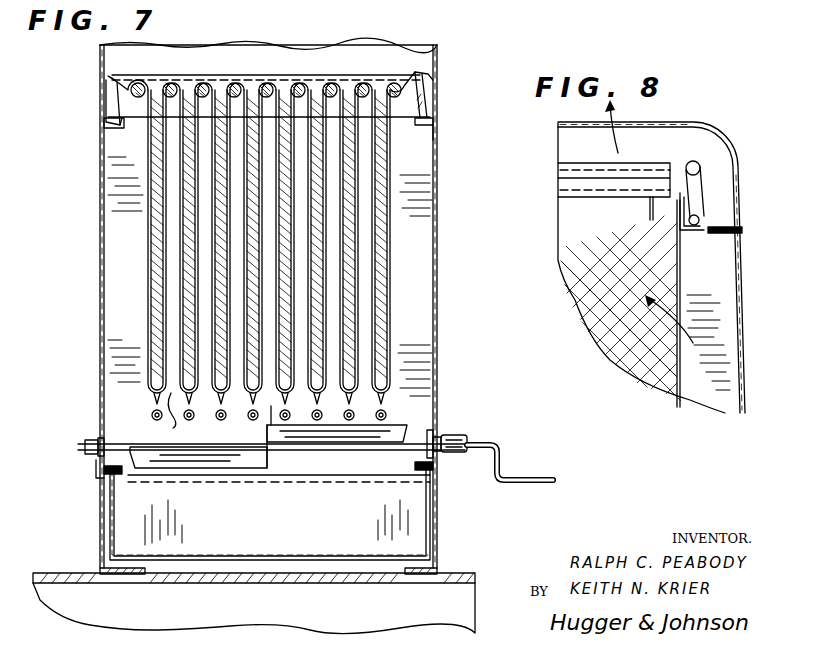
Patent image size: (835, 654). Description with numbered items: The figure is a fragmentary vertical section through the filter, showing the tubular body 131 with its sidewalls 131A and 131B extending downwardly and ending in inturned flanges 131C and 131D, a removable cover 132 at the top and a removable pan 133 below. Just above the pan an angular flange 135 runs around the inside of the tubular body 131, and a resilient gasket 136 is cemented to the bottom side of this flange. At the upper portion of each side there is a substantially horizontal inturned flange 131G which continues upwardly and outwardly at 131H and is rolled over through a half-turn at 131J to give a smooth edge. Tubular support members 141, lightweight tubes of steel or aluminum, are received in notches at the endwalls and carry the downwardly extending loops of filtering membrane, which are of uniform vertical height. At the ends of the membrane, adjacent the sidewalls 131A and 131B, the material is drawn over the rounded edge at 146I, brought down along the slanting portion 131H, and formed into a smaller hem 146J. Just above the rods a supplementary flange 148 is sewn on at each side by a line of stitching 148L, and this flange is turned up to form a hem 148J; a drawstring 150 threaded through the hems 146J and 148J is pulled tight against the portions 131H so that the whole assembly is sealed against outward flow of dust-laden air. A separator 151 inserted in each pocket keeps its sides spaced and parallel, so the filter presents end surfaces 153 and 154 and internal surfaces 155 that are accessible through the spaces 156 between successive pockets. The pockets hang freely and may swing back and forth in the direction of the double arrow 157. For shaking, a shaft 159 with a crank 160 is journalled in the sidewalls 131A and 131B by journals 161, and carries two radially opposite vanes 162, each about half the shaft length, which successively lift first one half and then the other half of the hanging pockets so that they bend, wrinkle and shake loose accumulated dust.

In FIG. 7, the tubular body 131 is at (100, 350).
In FIG. 7, the sidewall 131A is at (100, 236).
In FIG. 7, the sidewall 131B is at (437, 222).
In FIG. 7, the inturned flange 131C is at (100, 568).
In FIG. 7, the inturned flange 131D is at (430, 568).
In FIG. 7, the inturned flange 131G is at (422, 125).
In FIG. 7, the upwardly and outwardly extending flange portion 131H is at (425, 97).
In FIG. 8, the upwardly and outwardly extending flange portion 131H is at (673, 217).
In FIG. 7, the rolled-over flange 131J is at (437, 72).
In FIG. 7, the removable cover 132 is at (100, 60).
In FIG. 7, the removable pan 133 is at (135, 522).
In FIG. 7, the angular flange 135 is at (100, 468).
In FIG. 7, the resilient gasket 136 is at (108, 475).
In FIG. 7, the tubular support members 141 is at (240, 82).
In FIG. 7, the membrane end portion drawn over rounded edge 146I is at (105, 88).
In FIG. 7, the hem 146J is at (103, 112).
In FIG. 8, the supplementary flange 148 is at (700, 176).
In FIG. 8, the hem 148J is at (705, 222).
In FIG. 8, the line of stitching 148L is at (682, 168).
In FIG. 7, the drawstring 150 is at (104, 125).
In FIG. 8, the drawstring 150 is at (705, 228).
In FIG. 7, the separator 151 is at (381, 76).
In FIG. 7, the end surface 153 is at (393, 293).
In FIG. 7, the end surface 154 is at (150, 293).
In FIG. 7, the internal surfaces 155 is at (186, 417).
In FIG. 7, the spaces 156 is at (370, 270).
In FIG. 7, the double arrow 157 is at (212, 353).
In FIG. 7, the shaft 159 is at (485, 436).
In FIG. 7, the crank 160 is at (525, 477).
In FIG. 7, the journals 161 is at (100, 432).
In FIG. 7, the radially extending vanes 162 is at (235, 455).